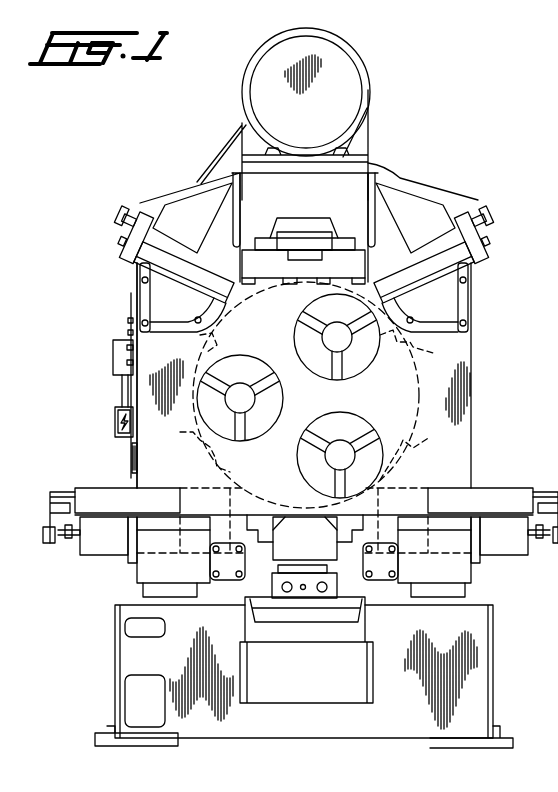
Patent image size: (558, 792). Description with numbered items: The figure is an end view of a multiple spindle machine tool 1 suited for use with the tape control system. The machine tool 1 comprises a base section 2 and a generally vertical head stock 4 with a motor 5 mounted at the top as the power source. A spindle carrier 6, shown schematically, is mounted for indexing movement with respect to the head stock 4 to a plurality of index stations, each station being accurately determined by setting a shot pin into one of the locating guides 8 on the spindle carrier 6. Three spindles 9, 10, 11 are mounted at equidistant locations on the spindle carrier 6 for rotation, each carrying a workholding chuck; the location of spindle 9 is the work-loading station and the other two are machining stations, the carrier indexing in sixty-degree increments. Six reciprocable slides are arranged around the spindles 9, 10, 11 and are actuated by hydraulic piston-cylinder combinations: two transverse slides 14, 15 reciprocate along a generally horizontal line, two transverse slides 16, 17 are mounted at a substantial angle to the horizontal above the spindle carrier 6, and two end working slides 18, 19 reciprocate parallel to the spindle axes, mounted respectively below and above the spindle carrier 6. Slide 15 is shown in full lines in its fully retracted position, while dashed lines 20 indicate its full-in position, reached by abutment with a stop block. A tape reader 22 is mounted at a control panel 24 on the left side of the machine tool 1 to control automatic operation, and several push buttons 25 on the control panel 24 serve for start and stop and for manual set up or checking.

The machine tool 1 is at (413, 184).
The base section 2 is at (127, 654).
The head stock 4 is at (468, 352).
The motor 5 is at (338, 57).
The spindle carrier 6 is at (195, 430).
The locating guides 8 is at (420, 350).
The spindle 9 is at (238, 388).
The spindle 10 is at (350, 443).
The spindle 11 is at (348, 347).
The transverse slide 14 is at (97, 497).
The transverse slide 15 is at (515, 490).
The transverse slide 16 is at (158, 262).
The transverse slide 17 is at (456, 258).
The end working slide 18 is at (302, 530).
The end working slide 19 is at (270, 260).
The dashed lines 20 is at (408, 555).
The tape reader 22 is at (113, 366).
The control panel 24 is at (132, 456).
The push buttons 25 is at (128, 333).